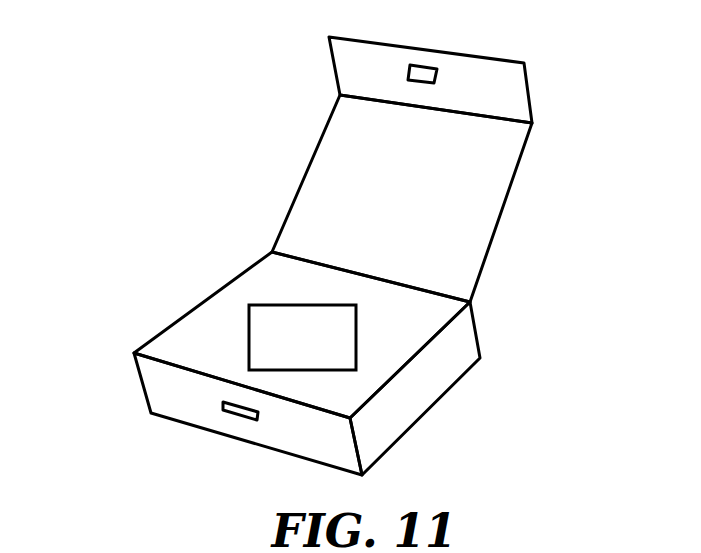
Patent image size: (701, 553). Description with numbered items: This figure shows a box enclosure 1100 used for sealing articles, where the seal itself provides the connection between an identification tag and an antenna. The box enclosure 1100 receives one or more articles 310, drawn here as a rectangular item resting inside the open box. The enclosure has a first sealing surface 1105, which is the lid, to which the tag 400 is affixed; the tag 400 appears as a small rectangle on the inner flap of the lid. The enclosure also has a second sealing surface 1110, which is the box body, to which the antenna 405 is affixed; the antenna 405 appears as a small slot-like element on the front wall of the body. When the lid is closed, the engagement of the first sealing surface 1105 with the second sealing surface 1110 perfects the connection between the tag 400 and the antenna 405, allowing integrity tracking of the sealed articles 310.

The box enclosure 1100 is at (110, 177).
The first sealing surface 1105 is at (556, 66).
The second sealing surface 1110 is at (158, 391).
The article 310 is at (248, 355).
The tag 400 is at (409, 72).
The antenna 405 is at (240, 421).